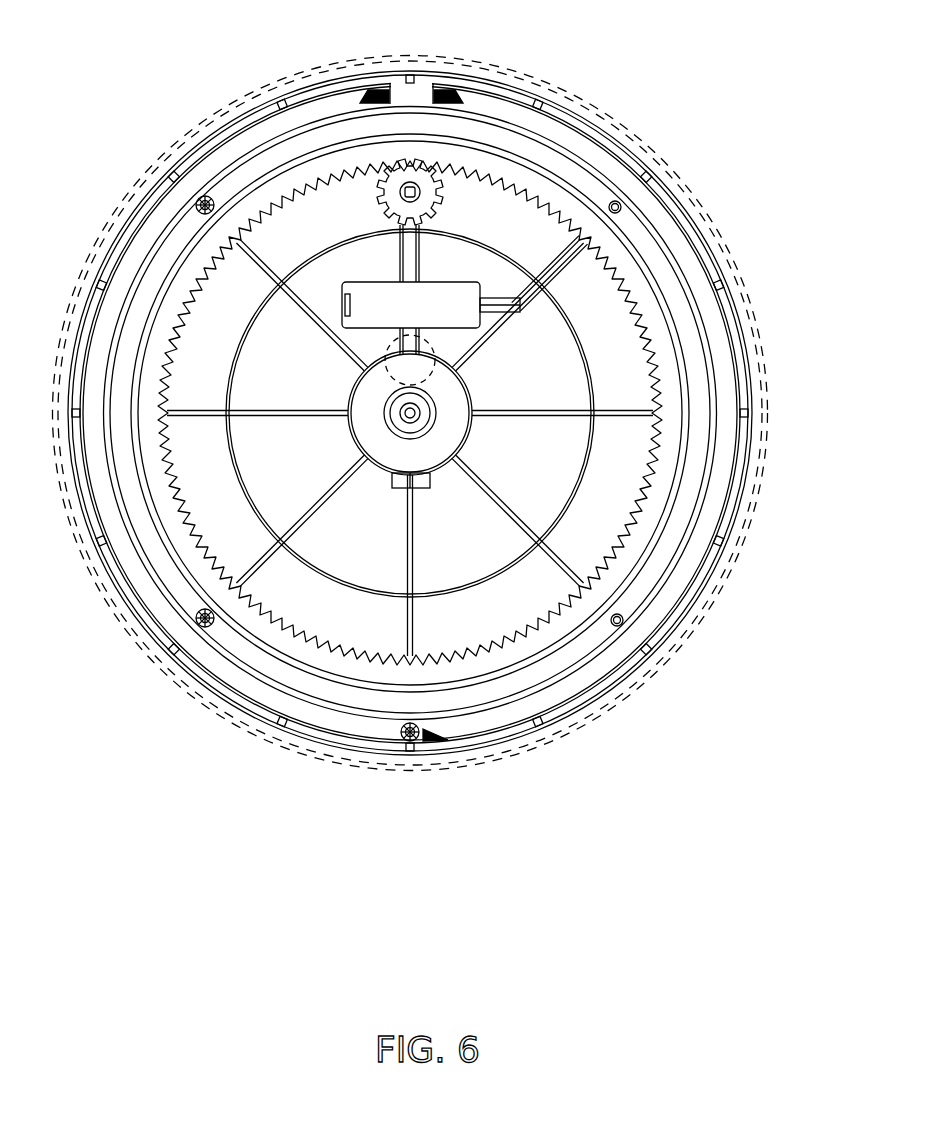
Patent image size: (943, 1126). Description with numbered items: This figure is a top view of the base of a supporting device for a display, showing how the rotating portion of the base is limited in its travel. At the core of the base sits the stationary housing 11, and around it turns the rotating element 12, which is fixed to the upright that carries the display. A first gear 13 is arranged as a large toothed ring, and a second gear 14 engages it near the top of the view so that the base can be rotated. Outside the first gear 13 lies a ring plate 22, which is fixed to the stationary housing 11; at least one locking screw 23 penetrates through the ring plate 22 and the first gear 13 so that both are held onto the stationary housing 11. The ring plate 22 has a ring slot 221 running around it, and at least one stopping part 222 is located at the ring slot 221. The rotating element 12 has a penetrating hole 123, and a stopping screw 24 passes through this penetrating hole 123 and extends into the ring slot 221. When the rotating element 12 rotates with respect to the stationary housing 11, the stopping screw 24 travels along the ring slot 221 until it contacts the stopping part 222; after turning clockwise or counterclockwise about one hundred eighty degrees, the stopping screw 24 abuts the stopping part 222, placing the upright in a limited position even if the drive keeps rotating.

The stationary housing 11 is at (627, 362).
The rotating element 12 is at (752, 503).
The first gear 13 is at (665, 452).
The second gear 14 is at (395, 172).
The ring plate 22 is at (347, 725).
The ring slot 221 is at (572, 140).
The stopping part 222 is at (358, 92).
The locking screw 23 is at (203, 628).
The stopping screw 24 is at (409, 742).
The penetrating hole 123 is at (446, 742).